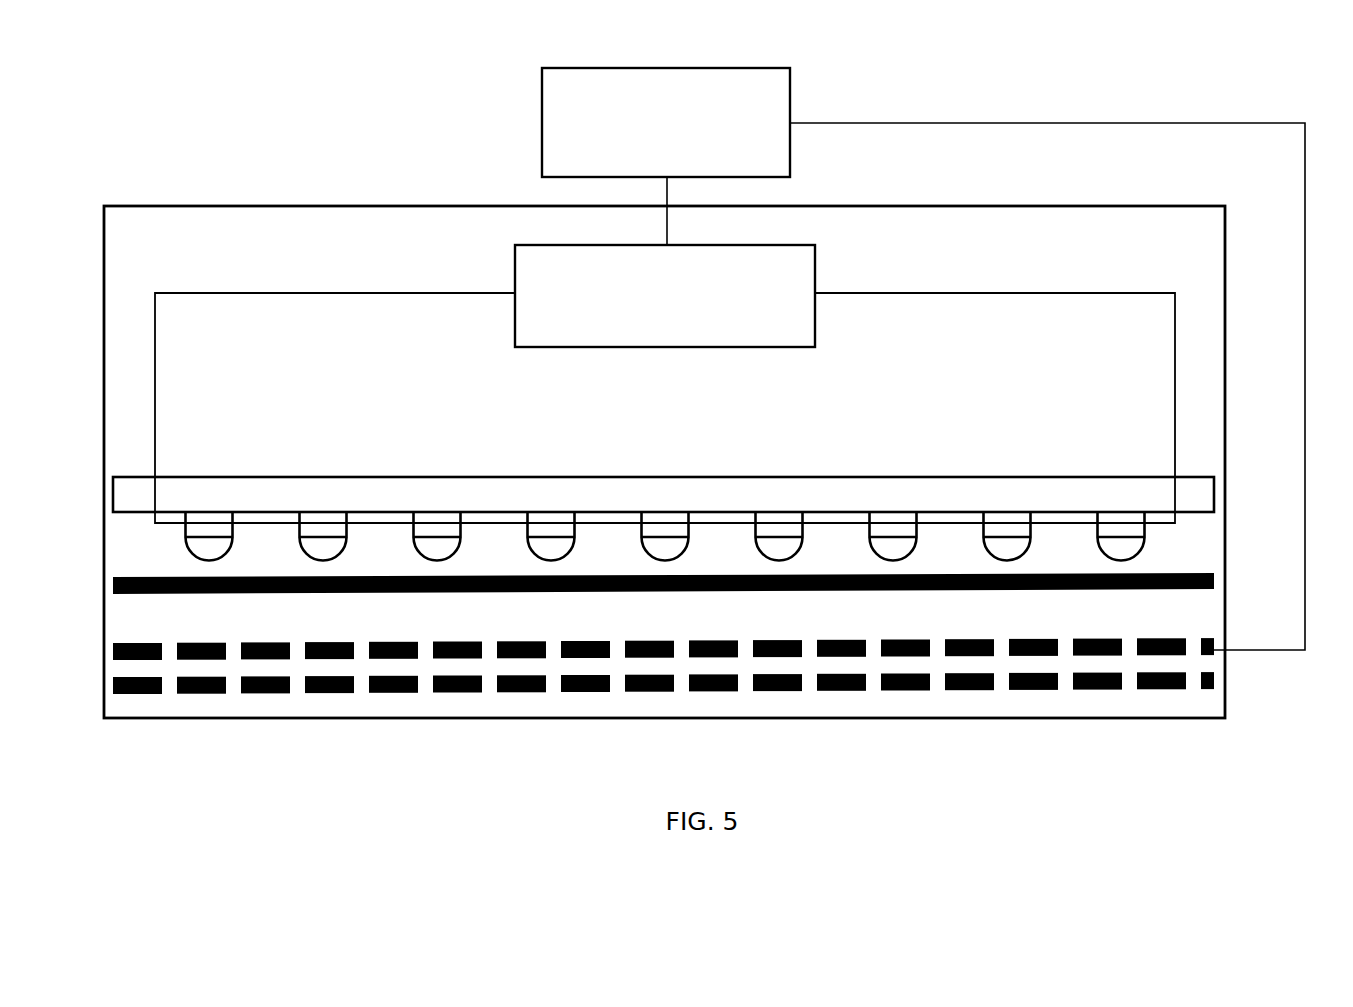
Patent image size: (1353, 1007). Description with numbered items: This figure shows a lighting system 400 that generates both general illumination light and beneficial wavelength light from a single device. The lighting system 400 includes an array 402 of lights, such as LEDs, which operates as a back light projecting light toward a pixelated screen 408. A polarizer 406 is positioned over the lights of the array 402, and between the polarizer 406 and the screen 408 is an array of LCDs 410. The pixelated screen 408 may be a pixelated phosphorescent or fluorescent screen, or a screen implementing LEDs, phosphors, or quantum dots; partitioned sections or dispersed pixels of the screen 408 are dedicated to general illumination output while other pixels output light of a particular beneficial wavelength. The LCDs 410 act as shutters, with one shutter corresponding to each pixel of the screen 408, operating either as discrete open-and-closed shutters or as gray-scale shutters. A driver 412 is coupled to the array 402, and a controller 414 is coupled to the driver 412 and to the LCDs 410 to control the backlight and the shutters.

The lighting system 400 is at (313, 137).
The array of lights 402 is at (273, 468).
The polarizer 406 is at (1213, 576).
The pixelated screen 408 is at (1218, 689).
The array of LCDs 410 is at (1071, 655).
The driver 412 is at (665, 384).
The controller 414 is at (923, 359).